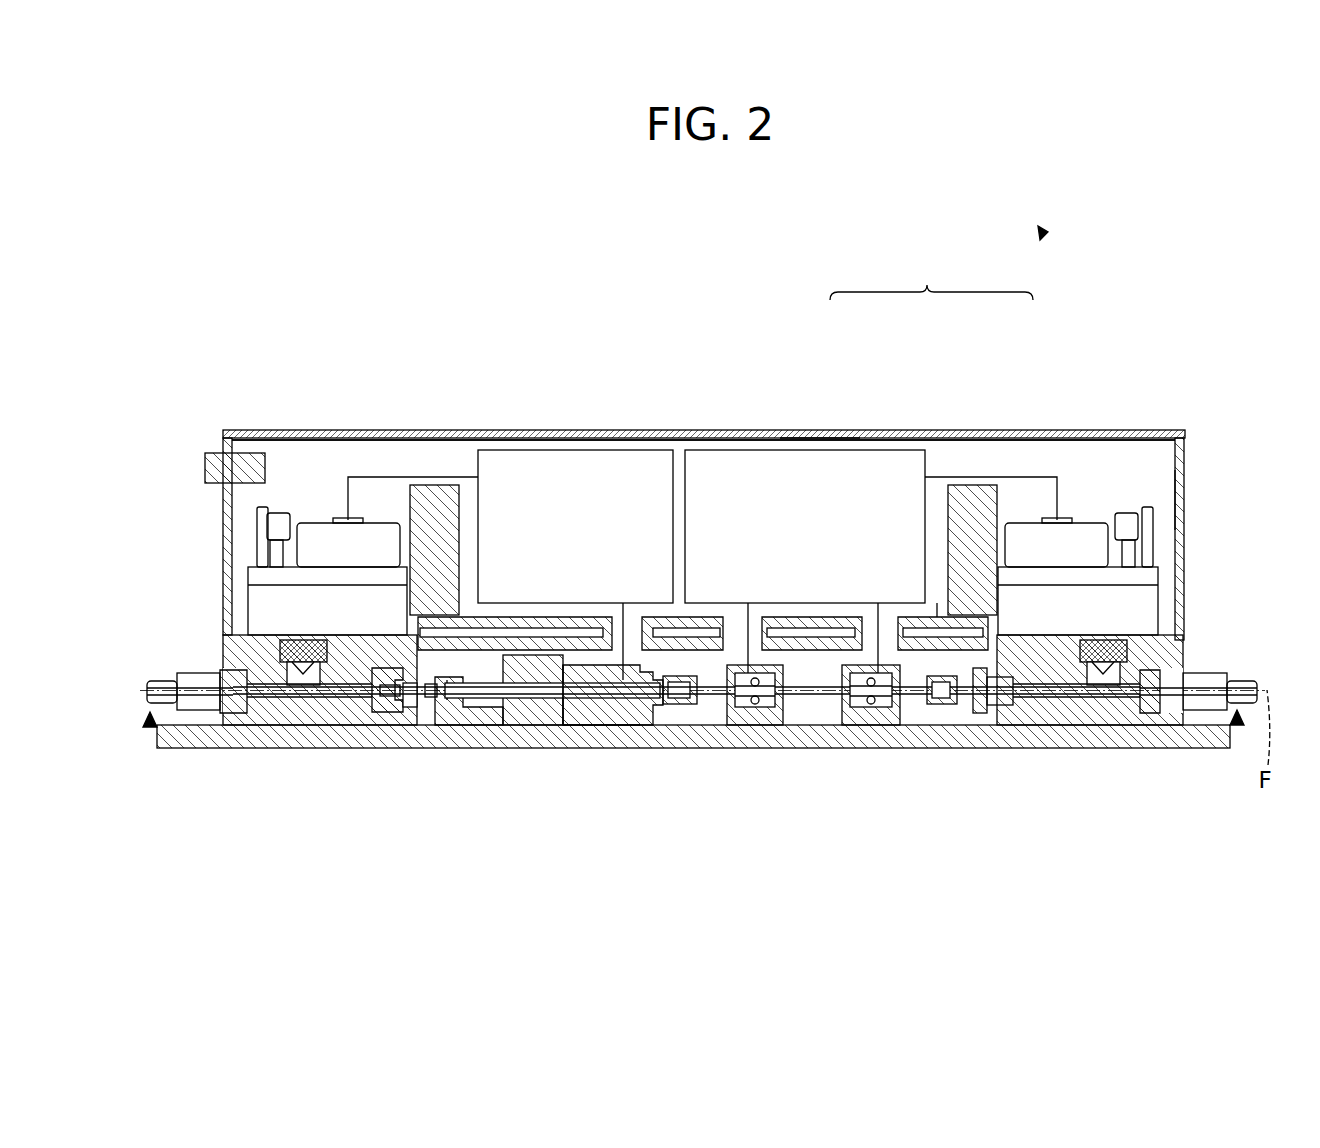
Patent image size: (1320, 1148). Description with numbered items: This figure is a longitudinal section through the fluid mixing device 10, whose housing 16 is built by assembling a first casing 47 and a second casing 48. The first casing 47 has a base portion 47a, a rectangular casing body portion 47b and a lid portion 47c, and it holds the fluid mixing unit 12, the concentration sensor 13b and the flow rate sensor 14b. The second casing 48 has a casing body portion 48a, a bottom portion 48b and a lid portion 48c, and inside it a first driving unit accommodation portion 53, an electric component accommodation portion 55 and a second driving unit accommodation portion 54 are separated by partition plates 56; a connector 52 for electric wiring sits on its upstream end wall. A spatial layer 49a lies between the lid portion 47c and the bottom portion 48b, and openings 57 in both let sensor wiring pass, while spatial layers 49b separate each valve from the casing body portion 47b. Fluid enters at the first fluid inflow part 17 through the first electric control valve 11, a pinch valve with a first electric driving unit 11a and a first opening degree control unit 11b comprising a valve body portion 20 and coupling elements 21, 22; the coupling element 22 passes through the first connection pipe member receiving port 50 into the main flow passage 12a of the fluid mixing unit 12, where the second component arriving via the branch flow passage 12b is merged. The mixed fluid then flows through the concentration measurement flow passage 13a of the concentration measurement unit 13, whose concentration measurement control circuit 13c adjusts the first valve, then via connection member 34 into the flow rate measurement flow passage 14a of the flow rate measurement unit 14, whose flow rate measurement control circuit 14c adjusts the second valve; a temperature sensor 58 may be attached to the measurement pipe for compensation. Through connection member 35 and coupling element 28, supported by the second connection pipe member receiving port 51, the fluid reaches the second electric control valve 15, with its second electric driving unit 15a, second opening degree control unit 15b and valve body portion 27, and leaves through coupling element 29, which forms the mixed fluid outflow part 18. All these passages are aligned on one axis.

The fluid mixing device 10 is at (1042, 235).
The first electric control valve 11 is at (245, 545).
The first electric driving unit 11a is at (248, 617).
The first opening degree control unit 11b is at (310, 688).
The fluid mixing unit 12 is at (565, 716).
The main flow passage 12a is at (512, 706).
The branch flow passage 12b is at (552, 696).
The concentration measurement unit 13 is at (633, 727).
The concentration measurement flow passage 13a is at (594, 718).
The concentration sensor 13b is at (583, 712).
The concentration measurement control circuit 13c is at (585, 475).
The flow rate measurement unit 14 is at (812, 703).
The flow rate measurement flow passage 14a is at (788, 702).
The flow rate sensor 14b is at (871, 702).
The flow rate measurement control circuit 14c is at (887, 475).
The second electric control valve 15 is at (1158, 555).
The second electric driving unit 15a is at (1140, 602).
The second opening degree control unit 15b is at (1097, 690).
The housing 16 is at (1180, 515).
The first fluid inflow part 17 is at (150, 725).
The mixed fluid outflow part 18 is at (1237, 723).
The valve body portion 20 is at (232, 660).
The coupling element 21 is at (196, 677).
The coupling element 22 is at (382, 702).
The valve body portion 27 is at (1163, 655).
The coupling element 28 is at (1000, 662).
The coupling element 29 is at (1215, 677).
The connection member 34 is at (680, 706).
The connection member 35 is at (942, 705).
The first casing 47 is at (338, 858).
The base portion 47a is at (397, 707).
The casing body portion 47b is at (433, 695).
The lid portion 47c is at (447, 700).
The second casing 48 is at (931, 278).
The casing body portion 48a is at (1173, 497).
The bottom portion 48b is at (937, 603).
The lid portion 48c is at (815, 420).
The spatial layer 49a is at (407, 632).
The spatial layer 49b is at (1000, 702).
The first connection pipe member receiving port 50 is at (412, 708).
The second connection pipe member receiving port 51 is at (983, 700).
The connector 52 is at (215, 468).
The first driving unit accommodation portion 53 is at (285, 455).
The second driving unit accommodation portion 54 is at (1133, 455).
The electric component accommodation portion 55 is at (467, 455).
The partition plate 56 is at (430, 497).
The opening 57 is at (872, 617).
The temperature sensor 58 is at (718, 738).